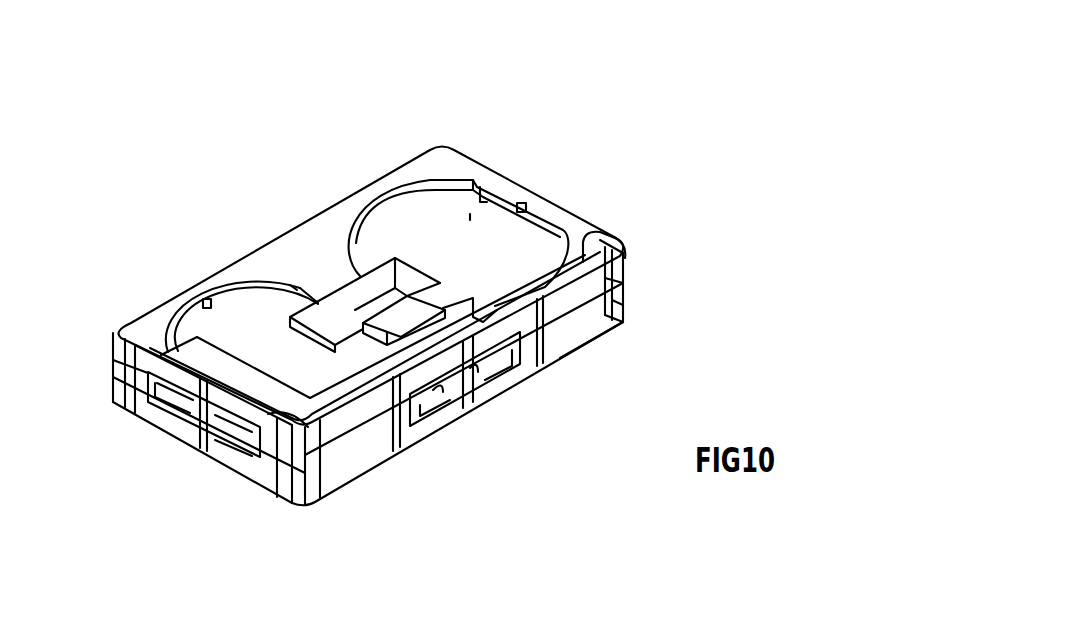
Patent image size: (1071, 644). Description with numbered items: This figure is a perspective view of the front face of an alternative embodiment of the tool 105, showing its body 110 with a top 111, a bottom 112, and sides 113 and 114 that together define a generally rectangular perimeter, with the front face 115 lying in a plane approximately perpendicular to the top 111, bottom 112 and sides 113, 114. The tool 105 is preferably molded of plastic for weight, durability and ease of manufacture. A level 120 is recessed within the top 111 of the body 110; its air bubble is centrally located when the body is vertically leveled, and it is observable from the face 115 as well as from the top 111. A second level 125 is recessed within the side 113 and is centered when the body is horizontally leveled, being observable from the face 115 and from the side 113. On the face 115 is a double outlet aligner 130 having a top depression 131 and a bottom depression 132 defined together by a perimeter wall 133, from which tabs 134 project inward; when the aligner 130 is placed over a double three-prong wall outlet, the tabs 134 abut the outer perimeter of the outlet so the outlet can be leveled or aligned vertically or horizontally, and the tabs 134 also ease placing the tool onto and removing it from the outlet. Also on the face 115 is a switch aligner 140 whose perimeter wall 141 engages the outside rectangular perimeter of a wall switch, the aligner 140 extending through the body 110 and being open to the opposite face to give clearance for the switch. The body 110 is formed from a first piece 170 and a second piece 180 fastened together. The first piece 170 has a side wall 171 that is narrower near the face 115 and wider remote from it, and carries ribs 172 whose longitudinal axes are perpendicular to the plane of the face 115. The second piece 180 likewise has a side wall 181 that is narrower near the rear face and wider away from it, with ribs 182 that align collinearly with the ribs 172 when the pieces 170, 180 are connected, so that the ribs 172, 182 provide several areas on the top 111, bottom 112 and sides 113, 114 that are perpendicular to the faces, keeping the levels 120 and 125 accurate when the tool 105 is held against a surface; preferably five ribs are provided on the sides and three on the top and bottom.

The tool 105 is at (115, 147).
The body 110 is at (160, 302).
The top 111 is at (142, 407).
The bottom 112 is at (622, 242).
The side 113 is at (350, 462).
The side 114 is at (350, 298).
The face 115 is at (283, 410).
The level 120 is at (208, 410).
The second level 125 is at (492, 393).
The double outlet aligner 130 is at (462, 197).
The top depression 131 is at (227, 312).
The bottom depression 132 is at (413, 212).
The perimeter wall 133 is at (482, 200).
The tabs 134 is at (505, 203).
The switch aligner 140 is at (357, 275).
The perimeter wall 141 is at (293, 310).
The first piece 170 is at (628, 273).
The side wall 171 is at (572, 303).
The ribs 172 is at (588, 238).
The second piece 180 is at (628, 310).
The side wall 181 is at (598, 327).
The ribs 182 is at (612, 320).